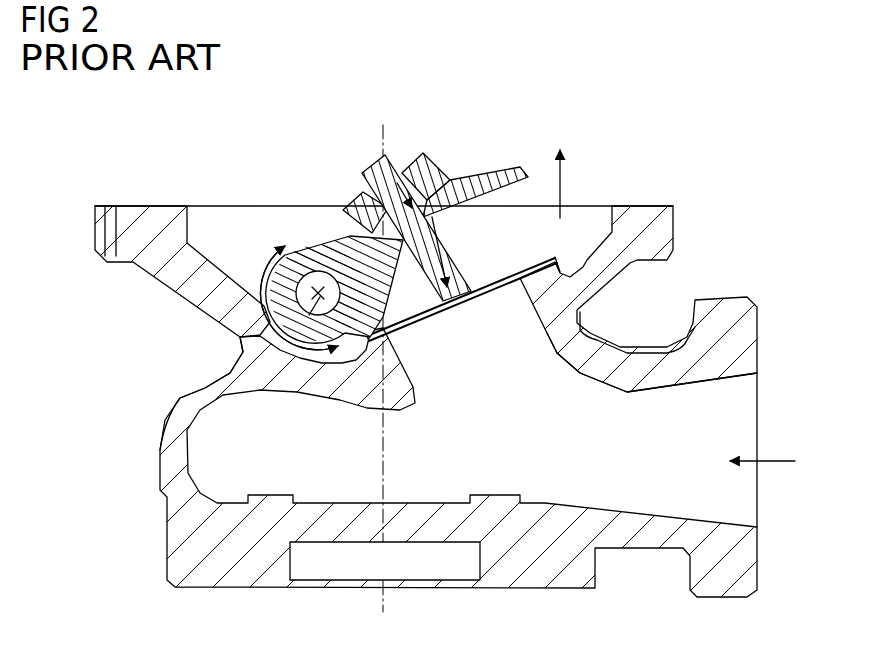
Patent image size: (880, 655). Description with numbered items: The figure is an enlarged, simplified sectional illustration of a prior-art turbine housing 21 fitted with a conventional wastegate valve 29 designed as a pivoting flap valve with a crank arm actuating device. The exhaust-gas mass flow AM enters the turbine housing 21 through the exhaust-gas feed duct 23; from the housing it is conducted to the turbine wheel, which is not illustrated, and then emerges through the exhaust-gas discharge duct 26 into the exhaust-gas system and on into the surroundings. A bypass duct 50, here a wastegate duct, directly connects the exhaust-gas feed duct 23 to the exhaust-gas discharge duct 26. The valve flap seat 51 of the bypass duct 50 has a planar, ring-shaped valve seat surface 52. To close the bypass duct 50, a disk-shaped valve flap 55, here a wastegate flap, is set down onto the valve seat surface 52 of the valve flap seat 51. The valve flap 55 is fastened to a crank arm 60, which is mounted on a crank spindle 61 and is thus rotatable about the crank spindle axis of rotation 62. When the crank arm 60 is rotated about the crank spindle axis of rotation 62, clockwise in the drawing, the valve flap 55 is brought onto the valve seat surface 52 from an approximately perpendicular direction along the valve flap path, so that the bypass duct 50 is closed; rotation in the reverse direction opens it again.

The turbine housing 21 is at (173, 465).
The exhaust-gas feed duct 23 is at (735, 402).
The exhaust-gas discharge duct 26 is at (218, 206).
The wastegate valve 29 is at (423, 135).
The bypass duct 50 is at (490, 333).
The valve flap seat 51 is at (428, 322).
The valve seat surface 52 is at (490, 283).
The valve flap 55 is at (496, 190).
The crank arm 60 is at (358, 240).
The crank spindle 61 is at (240, 337).
The crank spindle axis of rotation 62 is at (300, 298).
The exhaust-gas mass flow AM is at (562, 172).